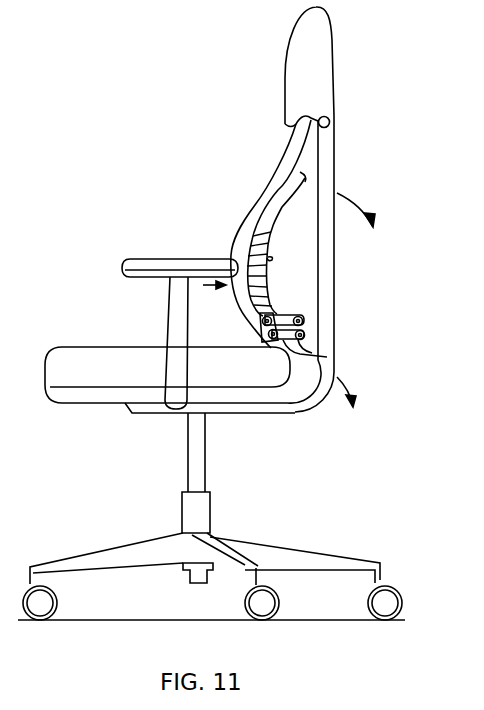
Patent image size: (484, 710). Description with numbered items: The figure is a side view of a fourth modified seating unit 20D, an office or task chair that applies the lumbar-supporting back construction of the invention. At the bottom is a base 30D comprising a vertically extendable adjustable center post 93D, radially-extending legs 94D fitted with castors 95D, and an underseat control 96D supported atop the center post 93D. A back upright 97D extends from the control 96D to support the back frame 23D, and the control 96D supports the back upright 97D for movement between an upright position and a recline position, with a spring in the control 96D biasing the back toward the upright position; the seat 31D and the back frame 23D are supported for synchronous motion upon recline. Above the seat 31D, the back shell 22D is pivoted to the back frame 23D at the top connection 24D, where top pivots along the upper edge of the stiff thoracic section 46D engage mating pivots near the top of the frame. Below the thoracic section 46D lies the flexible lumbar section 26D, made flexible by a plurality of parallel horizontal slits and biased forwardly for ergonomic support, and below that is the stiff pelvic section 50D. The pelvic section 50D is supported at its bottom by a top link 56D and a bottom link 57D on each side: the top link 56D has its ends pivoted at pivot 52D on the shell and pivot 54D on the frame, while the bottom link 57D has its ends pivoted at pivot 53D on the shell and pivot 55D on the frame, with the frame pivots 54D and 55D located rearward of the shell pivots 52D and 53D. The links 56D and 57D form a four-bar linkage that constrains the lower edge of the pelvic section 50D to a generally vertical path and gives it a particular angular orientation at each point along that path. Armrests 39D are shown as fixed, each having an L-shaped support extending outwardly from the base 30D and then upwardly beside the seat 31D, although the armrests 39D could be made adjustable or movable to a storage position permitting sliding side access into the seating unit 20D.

The seating unit 20D is at (400, 82).
The back shell 22D is at (282, 207).
The back frame 23D is at (372, 178).
The top connection 24D is at (332, 116).
The lumbar section 26D is at (268, 257).
The base 30D is at (241, 559).
The seat 31D is at (110, 345).
The armrests 39D is at (146, 257).
The thoracic section 46D is at (300, 172).
The pelvic section 50D is at (297, 322).
The pivot 52D is at (260, 317).
The pivot 53D is at (275, 340).
The pivot 54D is at (300, 313).
The pivot 55D is at (302, 333).
The top link 56D is at (277, 313).
The bottom link 57D is at (335, 361).
The center post 93D is at (206, 440).
The legs 94D is at (128, 543).
The castors 95D is at (404, 603).
The underseat control 96D is at (148, 417).
The back upright 97D is at (337, 350).